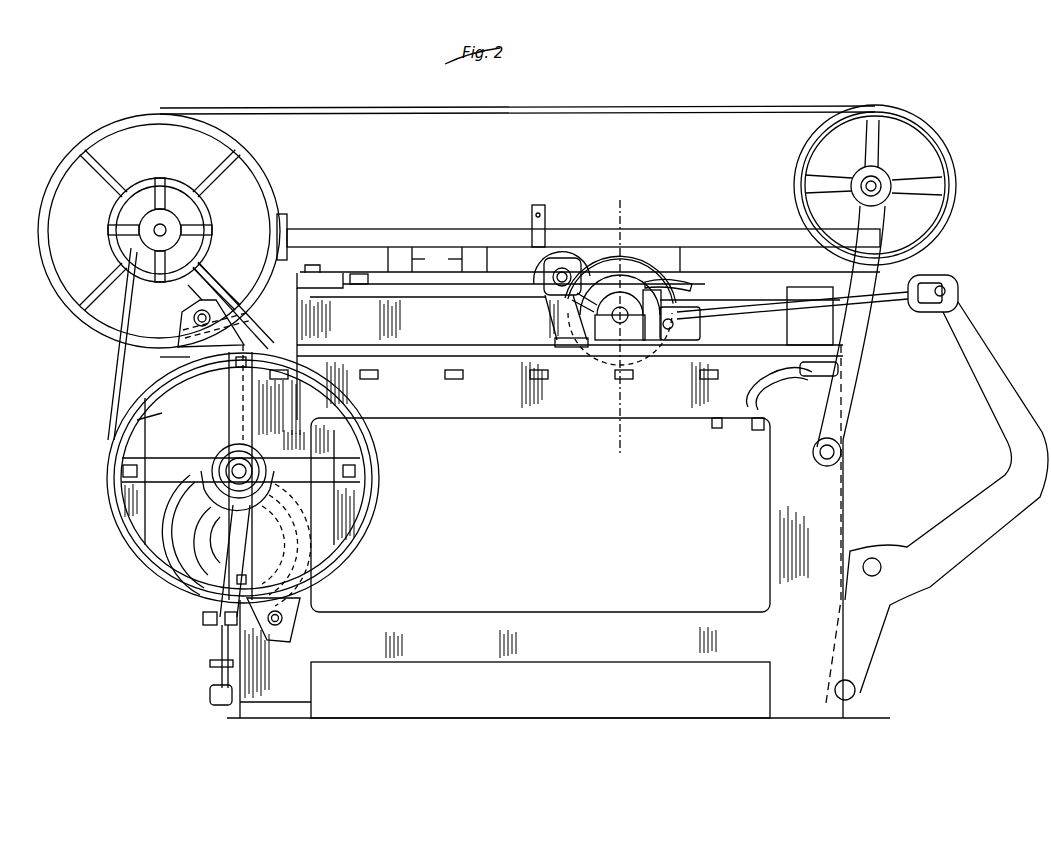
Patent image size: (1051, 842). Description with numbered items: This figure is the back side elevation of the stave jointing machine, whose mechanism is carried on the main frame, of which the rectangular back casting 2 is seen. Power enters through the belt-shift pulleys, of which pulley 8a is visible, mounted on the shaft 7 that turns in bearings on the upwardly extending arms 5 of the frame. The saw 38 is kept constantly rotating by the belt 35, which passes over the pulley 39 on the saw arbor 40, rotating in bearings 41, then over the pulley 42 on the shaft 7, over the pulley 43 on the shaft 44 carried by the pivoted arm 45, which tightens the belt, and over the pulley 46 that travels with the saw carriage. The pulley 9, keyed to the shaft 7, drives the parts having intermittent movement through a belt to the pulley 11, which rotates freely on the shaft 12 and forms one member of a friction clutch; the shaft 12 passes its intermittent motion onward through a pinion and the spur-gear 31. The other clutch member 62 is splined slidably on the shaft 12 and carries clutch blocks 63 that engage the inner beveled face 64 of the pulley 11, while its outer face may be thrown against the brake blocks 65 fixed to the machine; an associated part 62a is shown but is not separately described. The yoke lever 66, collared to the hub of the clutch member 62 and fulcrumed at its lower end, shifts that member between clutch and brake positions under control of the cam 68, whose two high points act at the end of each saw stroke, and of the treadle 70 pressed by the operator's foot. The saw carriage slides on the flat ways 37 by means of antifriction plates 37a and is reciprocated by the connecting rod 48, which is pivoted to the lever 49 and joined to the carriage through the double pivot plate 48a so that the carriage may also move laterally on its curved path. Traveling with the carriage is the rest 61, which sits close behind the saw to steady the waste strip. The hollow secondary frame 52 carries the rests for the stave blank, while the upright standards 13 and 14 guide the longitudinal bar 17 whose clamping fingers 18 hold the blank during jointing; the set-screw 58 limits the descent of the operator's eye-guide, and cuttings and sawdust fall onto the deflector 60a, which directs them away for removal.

The rectangular back casting 2 is at (517, 531).
The upwardly extending arms 5 is at (184, 290).
The shaft 7 is at (155, 232).
The belt-shift pulley 8a is at (110, 215).
The pulley 9 is at (145, 205).
The pulley 11 is at (107, 454).
The shaft 12 is at (226, 474).
The upright standard 13 is at (810, 316).
The upright standard 14 is at (482, 347).
The longitudinal bar 17 is at (489, 241).
The clamping fingers 18 is at (437, 259).
The spur-gear 31 is at (186, 510).
The belt 35 is at (704, 106).
The flat ways 37 is at (498, 348).
The antifriction plates 37a is at (658, 342).
The saw 38 is at (630, 258).
The pulley 39 is at (560, 304).
The saw arbor 40 is at (616, 324).
The bearings 41 is at (563, 345).
The pulley 42 is at (256, 182).
The pulley 43 is at (955, 188).
The shaft 44 is at (876, 182).
The pivoted arm 45 is at (862, 330).
The pulley 46 is at (565, 256).
The connecting rod 48 is at (738, 318).
The double pivot plate 48a is at (691, 325).
The lever 49 is at (976, 380).
The hollow secondary frame 52 is at (575, 311).
The set-screw 58 is at (538, 212).
The deflector 60a is at (540, 515).
The rest or support 61 is at (676, 285).
The clutch member 62 is at (238, 422).
The link arm 62a is at (160, 357).
The clutch blocks 63 is at (185, 378).
The inner beveled face 64 is at (375, 458).
The brake blocks 65 is at (222, 330).
The yoke lever 66 is at (196, 586).
The cam 68 is at (225, 523).
The treadle 70 is at (109, 369).